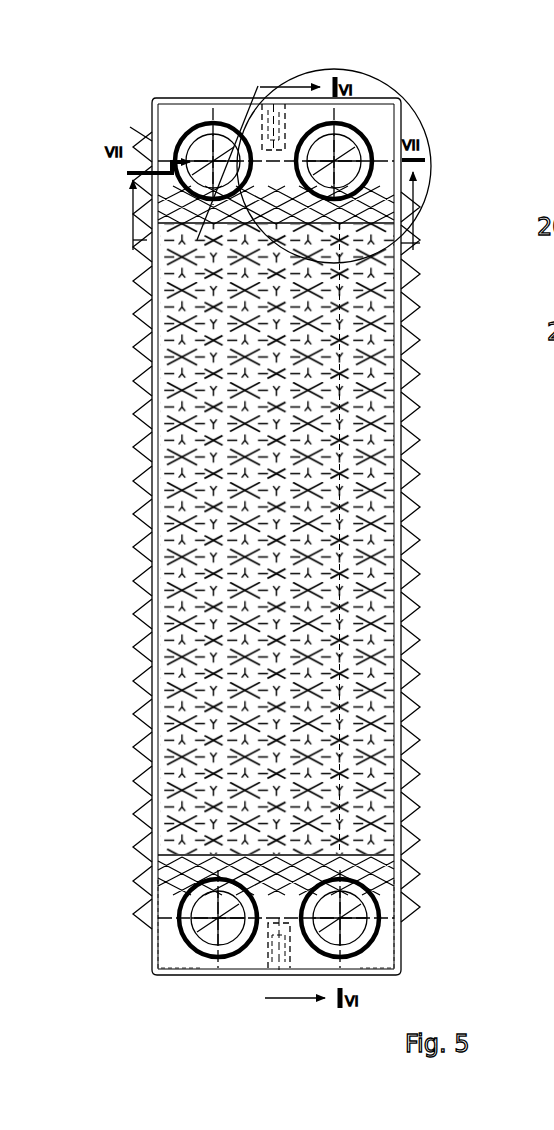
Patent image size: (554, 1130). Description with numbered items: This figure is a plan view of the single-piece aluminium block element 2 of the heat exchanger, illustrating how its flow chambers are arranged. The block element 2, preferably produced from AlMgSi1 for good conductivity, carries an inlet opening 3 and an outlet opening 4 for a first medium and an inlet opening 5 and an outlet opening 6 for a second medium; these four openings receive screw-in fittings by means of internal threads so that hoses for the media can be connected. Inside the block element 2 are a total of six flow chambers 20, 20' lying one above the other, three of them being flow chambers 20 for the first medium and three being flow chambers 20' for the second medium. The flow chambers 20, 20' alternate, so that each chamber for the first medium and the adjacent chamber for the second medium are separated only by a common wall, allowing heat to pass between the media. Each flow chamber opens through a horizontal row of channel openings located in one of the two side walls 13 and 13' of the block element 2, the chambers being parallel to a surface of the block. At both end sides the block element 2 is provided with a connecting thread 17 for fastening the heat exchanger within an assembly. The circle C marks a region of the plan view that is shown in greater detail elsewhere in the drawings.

The block element 2 is at (200, 122).
The inlet opening 3 is at (186, 125).
The outlet opening 4 is at (202, 958).
The inlet opening 5 is at (365, 946).
The outlet opening 6 is at (370, 126).
The connecting thread 17 is at (232, 86).
The circle indicating detail area C is at (418, 100).
The flow chamber 20 is at (92, 530).
The flow chamber 20' is at (449, 557).
The side wall 13 is at (130, 924).
The side wall 13' is at (420, 923).